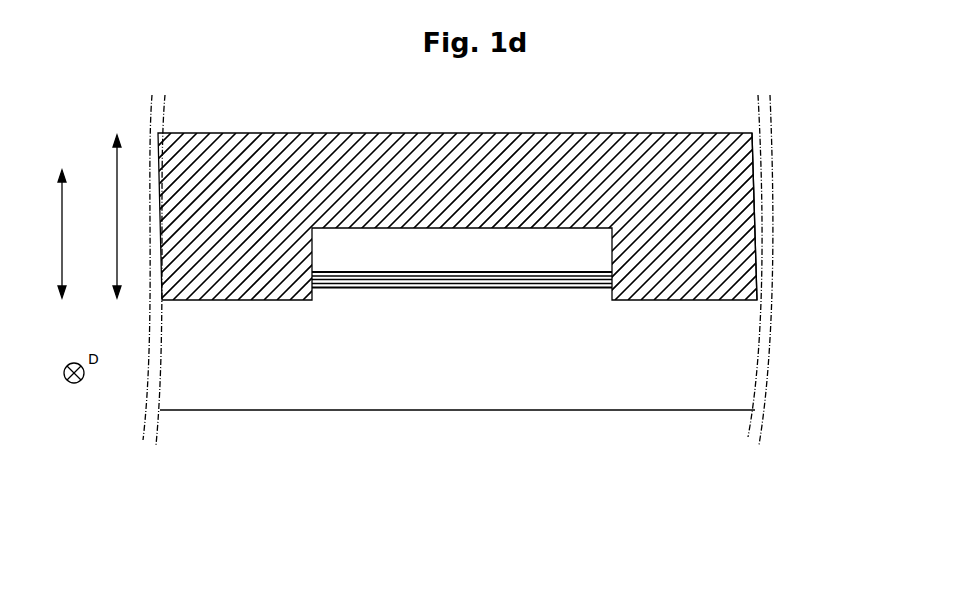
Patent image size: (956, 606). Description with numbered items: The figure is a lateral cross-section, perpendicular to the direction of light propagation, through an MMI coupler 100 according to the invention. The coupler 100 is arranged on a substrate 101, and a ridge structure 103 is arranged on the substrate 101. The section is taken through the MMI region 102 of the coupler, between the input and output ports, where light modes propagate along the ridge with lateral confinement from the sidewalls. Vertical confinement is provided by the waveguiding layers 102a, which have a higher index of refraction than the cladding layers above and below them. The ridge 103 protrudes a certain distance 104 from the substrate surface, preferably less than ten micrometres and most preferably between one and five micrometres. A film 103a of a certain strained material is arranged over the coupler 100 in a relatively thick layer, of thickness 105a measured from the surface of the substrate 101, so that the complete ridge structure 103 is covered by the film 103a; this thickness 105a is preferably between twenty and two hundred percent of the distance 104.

The MMI coupler 100 is at (567, 485).
The substrate 101 is at (642, 347).
The MMI region 102 is at (620, 299).
The waveguiding layers 102a is at (389, 271).
The ridge structure 103 is at (612, 233).
The film 103a is at (756, 289).
The distance 104 is at (58, 246).
The thickness 105a is at (120, 228).